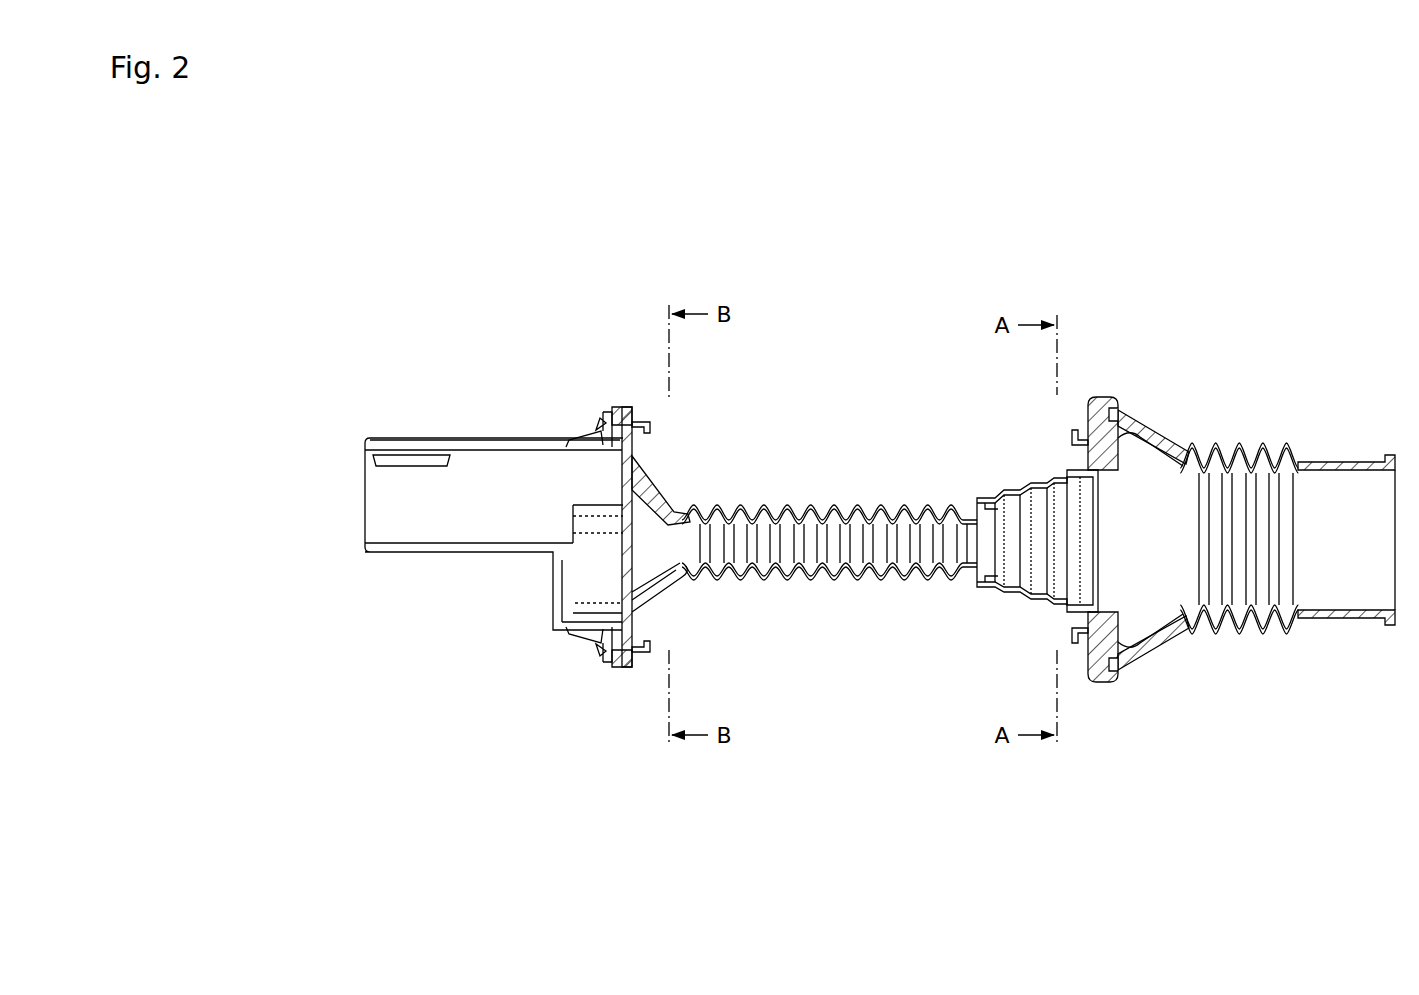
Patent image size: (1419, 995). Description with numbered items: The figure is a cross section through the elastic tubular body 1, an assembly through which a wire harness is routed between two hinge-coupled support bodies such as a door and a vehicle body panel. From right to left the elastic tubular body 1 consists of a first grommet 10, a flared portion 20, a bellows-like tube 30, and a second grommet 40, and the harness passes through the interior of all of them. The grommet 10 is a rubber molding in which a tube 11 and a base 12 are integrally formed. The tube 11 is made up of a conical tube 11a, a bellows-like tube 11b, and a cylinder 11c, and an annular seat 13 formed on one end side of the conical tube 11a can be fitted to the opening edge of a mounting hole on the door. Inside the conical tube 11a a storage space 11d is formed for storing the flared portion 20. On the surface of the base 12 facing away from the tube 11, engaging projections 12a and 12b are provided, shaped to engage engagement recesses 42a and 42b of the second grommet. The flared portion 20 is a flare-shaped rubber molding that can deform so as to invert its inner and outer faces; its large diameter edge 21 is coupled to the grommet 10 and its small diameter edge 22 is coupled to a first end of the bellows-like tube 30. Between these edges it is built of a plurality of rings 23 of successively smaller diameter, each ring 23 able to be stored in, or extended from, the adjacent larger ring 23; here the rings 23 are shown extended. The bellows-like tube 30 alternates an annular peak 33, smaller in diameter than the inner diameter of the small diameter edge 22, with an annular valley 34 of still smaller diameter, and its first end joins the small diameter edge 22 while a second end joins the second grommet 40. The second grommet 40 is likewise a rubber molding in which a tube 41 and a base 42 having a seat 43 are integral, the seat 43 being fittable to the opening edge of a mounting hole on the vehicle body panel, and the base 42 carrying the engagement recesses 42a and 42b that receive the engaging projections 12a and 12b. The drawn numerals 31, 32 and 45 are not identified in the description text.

The elastic tubular body 1 is at (1187, 243).
The first grommet 10 is at (1214, 323).
The tube 11 is at (1256, 515).
The conical tube 11a is at (1163, 433).
The bellows-like tube 11b is at (1243, 441).
The cylinder 11c is at (1346, 502).
The storage space 11d is at (1155, 612).
The base 12 is at (1080, 501).
The engaging projection 12a is at (1072, 434).
The engaging projection 12b is at (1072, 638).
The annular seat 13 is at (1118, 412).
The flared portion 20 is at (1027, 480).
The large diameter edge 21 is at (1080, 470).
The small diameter edge 22 is at (980, 497).
The ring 23 is at (1010, 489).
The bellows-like tube 30 is at (825, 520).
The end portion 31 is at (973, 582).
The end portion 32 is at (680, 582).
The annular peak 33 is at (783, 507).
The annular valley 34 is at (822, 507).
The second grommet 40 is at (632, 501).
The tube 41 is at (668, 484).
The base 42 is at (629, 392).
The engagement recess 42a is at (650, 421).
The engagement recess 42b is at (648, 656).
The seat 43 is at (604, 418).
The connector housing 45 is at (445, 438).